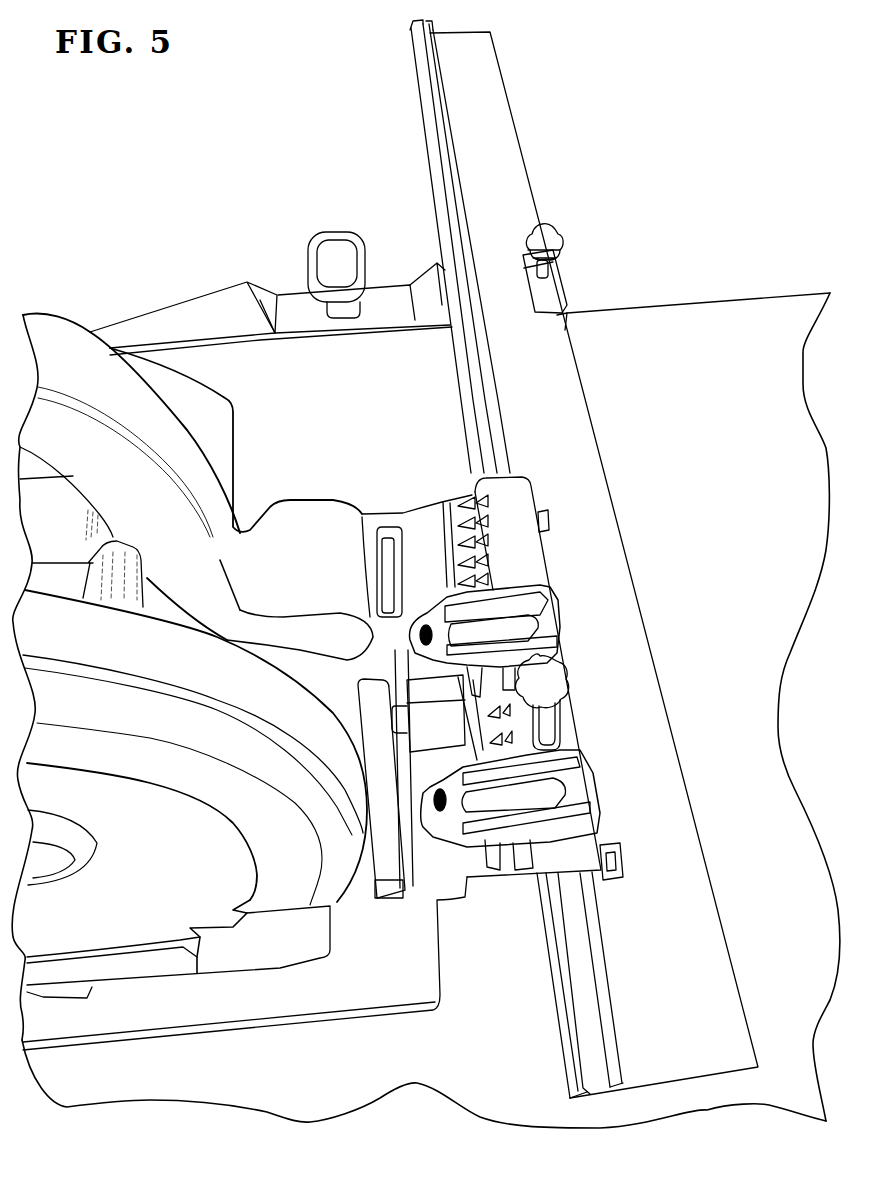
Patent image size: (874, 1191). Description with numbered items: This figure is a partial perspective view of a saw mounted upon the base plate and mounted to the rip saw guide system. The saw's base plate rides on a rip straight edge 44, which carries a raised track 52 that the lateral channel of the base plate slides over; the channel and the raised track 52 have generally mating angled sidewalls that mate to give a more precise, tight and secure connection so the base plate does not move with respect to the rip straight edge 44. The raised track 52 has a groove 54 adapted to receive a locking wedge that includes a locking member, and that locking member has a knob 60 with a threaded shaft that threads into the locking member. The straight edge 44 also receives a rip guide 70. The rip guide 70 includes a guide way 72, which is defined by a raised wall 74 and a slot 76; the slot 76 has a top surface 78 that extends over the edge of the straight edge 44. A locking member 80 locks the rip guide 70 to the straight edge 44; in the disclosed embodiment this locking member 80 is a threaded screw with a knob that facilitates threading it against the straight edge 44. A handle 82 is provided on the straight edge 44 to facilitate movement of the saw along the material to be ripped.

The rip straight edge 44 is at (600, 572).
The raised track 52 is at (507, 427).
The groove 54 is at (600, 993).
The knob 60 is at (567, 677).
The rip guide 70 is at (147, 327).
The guide way 72 is at (480, 317).
The raised wall 74 is at (423, 307).
The slot 76 is at (562, 327).
The top surface 78 is at (555, 275).
The locking member 80 is at (556, 236).
The handle 82 is at (300, 265).